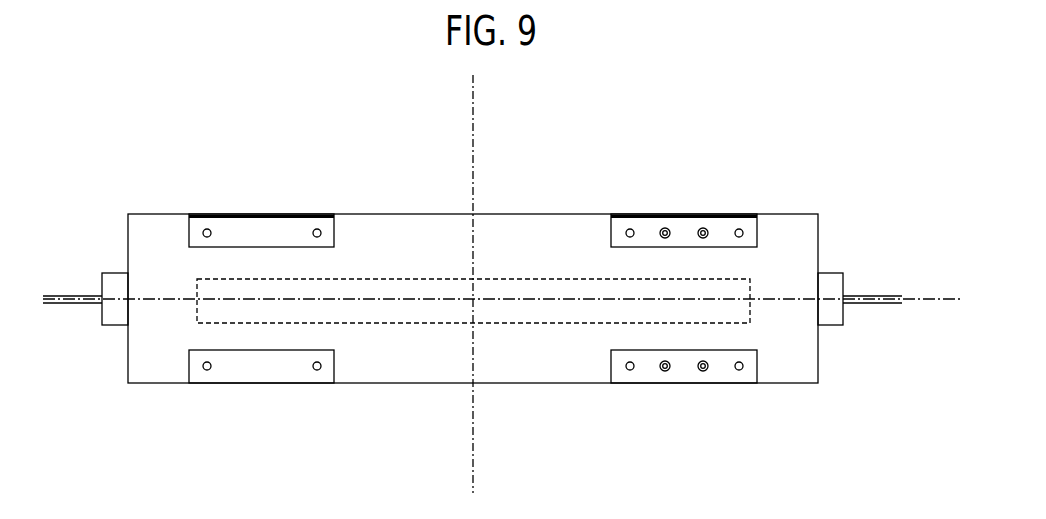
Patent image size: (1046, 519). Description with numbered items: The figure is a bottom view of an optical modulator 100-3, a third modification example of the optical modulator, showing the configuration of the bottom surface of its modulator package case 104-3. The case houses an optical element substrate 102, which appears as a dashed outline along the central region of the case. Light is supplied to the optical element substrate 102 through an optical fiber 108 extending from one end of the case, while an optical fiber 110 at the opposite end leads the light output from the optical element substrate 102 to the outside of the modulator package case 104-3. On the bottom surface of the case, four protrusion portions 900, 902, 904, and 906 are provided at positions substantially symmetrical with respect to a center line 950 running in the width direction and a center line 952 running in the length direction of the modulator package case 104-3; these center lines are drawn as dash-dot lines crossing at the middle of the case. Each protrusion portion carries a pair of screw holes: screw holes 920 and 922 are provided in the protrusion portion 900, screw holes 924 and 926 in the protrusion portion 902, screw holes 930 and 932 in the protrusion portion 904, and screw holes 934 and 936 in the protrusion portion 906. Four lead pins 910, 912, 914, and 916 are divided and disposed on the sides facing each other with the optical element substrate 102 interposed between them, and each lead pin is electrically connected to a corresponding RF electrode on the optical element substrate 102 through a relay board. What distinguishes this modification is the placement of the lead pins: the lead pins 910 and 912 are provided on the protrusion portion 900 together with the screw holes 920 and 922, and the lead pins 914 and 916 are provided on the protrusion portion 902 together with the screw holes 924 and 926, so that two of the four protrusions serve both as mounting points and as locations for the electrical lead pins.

The optical modulator 100-3 is at (190, 122).
The modulator package case 104-3 is at (473, 258).
The optical element substrate 102 is at (473, 368).
The optical fiber 108 is at (862, 341).
The optical fiber 110 is at (85, 342).
The protrusion portion 900 is at (678, 427).
The protrusion portion 902 is at (683, 172).
The protrusion portion 904 is at (262, 409).
The protrusion portion 906 is at (258, 190).
The lead pin 910 is at (632, 418).
The lead pin 912 is at (732, 418).
The lead pin 914 is at (632, 180).
The lead pin 916 is at (735, 180).
The screw hole 920 is at (576, 399).
The screw hole 922 is at (786, 403).
The screw hole 924 is at (578, 196).
The screw hole 926 is at (790, 196).
The screw hole 930 is at (187, 404).
The screw hole 932 is at (337, 404).
The screw hole 934 is at (184, 195).
The screw hole 936 is at (335, 195).
The center line 950 is at (501, 256).
The center line 952 is at (424, 284).